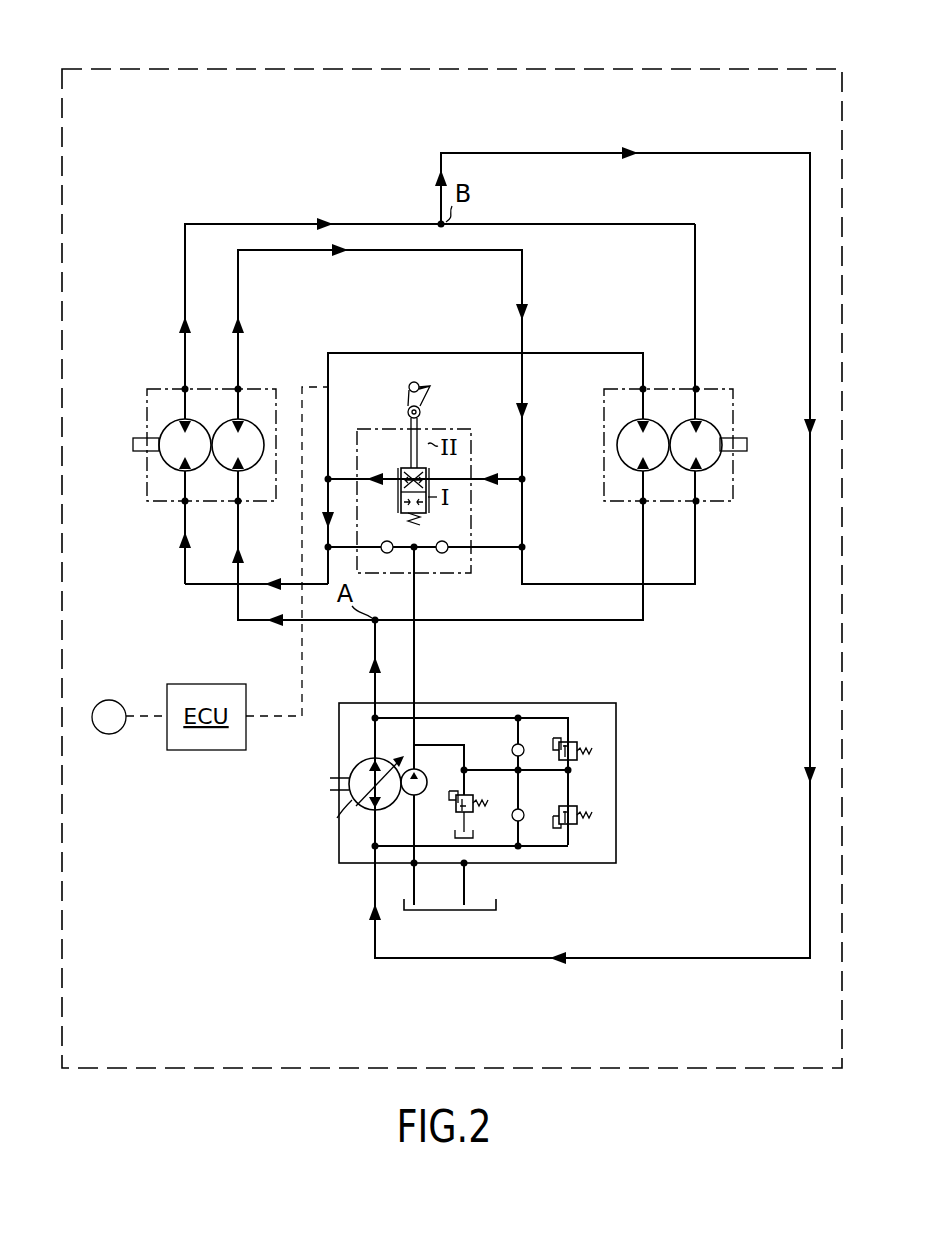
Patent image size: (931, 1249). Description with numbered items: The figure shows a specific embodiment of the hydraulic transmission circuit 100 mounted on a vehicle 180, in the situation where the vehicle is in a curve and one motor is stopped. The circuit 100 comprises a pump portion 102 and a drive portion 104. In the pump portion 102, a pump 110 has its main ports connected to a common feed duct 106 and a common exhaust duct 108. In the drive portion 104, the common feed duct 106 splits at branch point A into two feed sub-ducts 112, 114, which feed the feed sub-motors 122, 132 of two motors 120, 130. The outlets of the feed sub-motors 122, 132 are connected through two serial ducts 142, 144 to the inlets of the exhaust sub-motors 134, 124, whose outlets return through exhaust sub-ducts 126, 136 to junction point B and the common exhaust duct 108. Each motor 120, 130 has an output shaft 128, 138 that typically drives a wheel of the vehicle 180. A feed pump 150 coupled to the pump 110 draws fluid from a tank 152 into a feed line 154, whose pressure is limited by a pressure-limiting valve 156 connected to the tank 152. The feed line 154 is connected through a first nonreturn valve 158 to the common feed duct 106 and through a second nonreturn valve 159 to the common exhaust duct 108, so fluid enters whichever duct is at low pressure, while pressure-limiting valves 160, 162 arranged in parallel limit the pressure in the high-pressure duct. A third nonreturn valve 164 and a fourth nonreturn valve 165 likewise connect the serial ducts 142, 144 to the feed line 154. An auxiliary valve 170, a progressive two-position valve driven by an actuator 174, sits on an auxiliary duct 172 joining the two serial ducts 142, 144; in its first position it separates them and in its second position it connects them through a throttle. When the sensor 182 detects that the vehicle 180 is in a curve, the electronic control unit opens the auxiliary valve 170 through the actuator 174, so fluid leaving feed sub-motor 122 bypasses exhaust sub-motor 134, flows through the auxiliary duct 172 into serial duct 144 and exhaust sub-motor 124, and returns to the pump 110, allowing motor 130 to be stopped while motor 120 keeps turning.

The hydraulic transmission circuit 100 is at (275, 175).
The pump portion 102 is at (476, 862).
The drive portion 104 is at (191, 447).
The common feed duct 106 is at (373, 640).
The common exhaust duct 108 is at (373, 938).
The pump 110 is at (346, 792).
The feed sub-duct 112 is at (236, 606).
The feed sub-duct 114 is at (616, 624).
The motor 120 is at (152, 386).
The feed sub-motor 122 is at (252, 422).
The exhaust sub-motor 124 is at (170, 462).
The exhaust sub-duct 126 is at (183, 260).
The output shaft 128 is at (128, 444).
The motor 130 is at (734, 388).
The feed sub-motor 132 is at (622, 440).
The exhaust sub-motor 134 is at (714, 464).
The exhaust sub-duct 136 is at (698, 262).
The output shaft 138 is at (748, 446).
The first serial duct 142 is at (428, 253).
The second serial duct 144 is at (394, 352).
The feed pump 150 is at (420, 768).
The tank 152 is at (450, 871).
The feed line 154 is at (417, 654).
The pressure-limiting valve 156 is at (476, 820).
The first nonreturn valve 158 is at (520, 744).
The second nonreturn valve 159 is at (522, 822).
The pressure-limiting valve 160 is at (580, 742).
The pressure-limiting valve 162 is at (580, 807).
The third nonreturn valve 164 is at (442, 556).
The fourth nonreturn valve 165 is at (385, 556).
The auxiliary valve 170 is at (398, 466).
The auxiliary duct 172 is at (500, 482).
The actuator 174 is at (432, 388).
The vehicle 180 is at (305, 66).
The sensor 182 is at (108, 735).